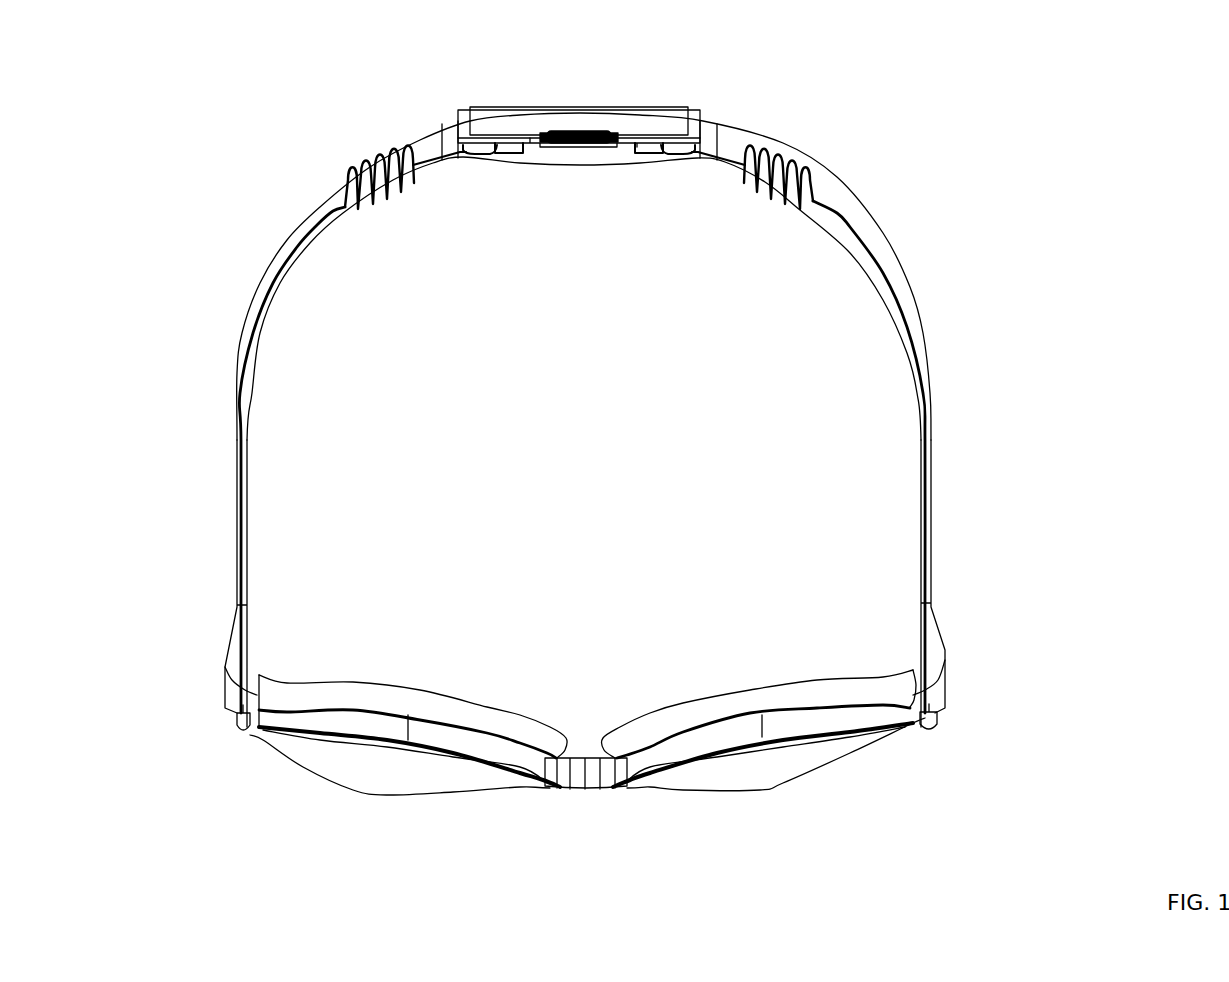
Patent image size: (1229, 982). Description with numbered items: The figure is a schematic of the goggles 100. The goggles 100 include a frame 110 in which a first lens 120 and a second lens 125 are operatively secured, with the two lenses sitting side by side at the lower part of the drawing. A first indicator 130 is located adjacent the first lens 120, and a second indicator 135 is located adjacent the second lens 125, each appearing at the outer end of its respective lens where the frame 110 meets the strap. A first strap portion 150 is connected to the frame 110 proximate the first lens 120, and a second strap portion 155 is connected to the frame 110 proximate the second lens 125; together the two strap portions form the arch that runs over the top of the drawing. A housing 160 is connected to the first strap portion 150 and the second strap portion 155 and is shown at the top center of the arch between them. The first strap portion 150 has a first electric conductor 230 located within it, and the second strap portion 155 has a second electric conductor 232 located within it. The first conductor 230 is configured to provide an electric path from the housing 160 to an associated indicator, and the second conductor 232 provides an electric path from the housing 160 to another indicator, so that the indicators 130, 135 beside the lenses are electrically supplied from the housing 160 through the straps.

The goggles 100 is at (1058, 463).
The frame 110 is at (945, 680).
The first lens 120 is at (400, 777).
The second lens 125 is at (752, 777).
The first indicator 130 is at (240, 733).
The second indicator 135 is at (932, 730).
The first strap portion 150 is at (258, 285).
The second strap portion 155 is at (902, 275).
The housing 160 is at (678, 112).
The first electric conductor 230 is at (320, 223).
The second electric conductor 232 is at (847, 222).